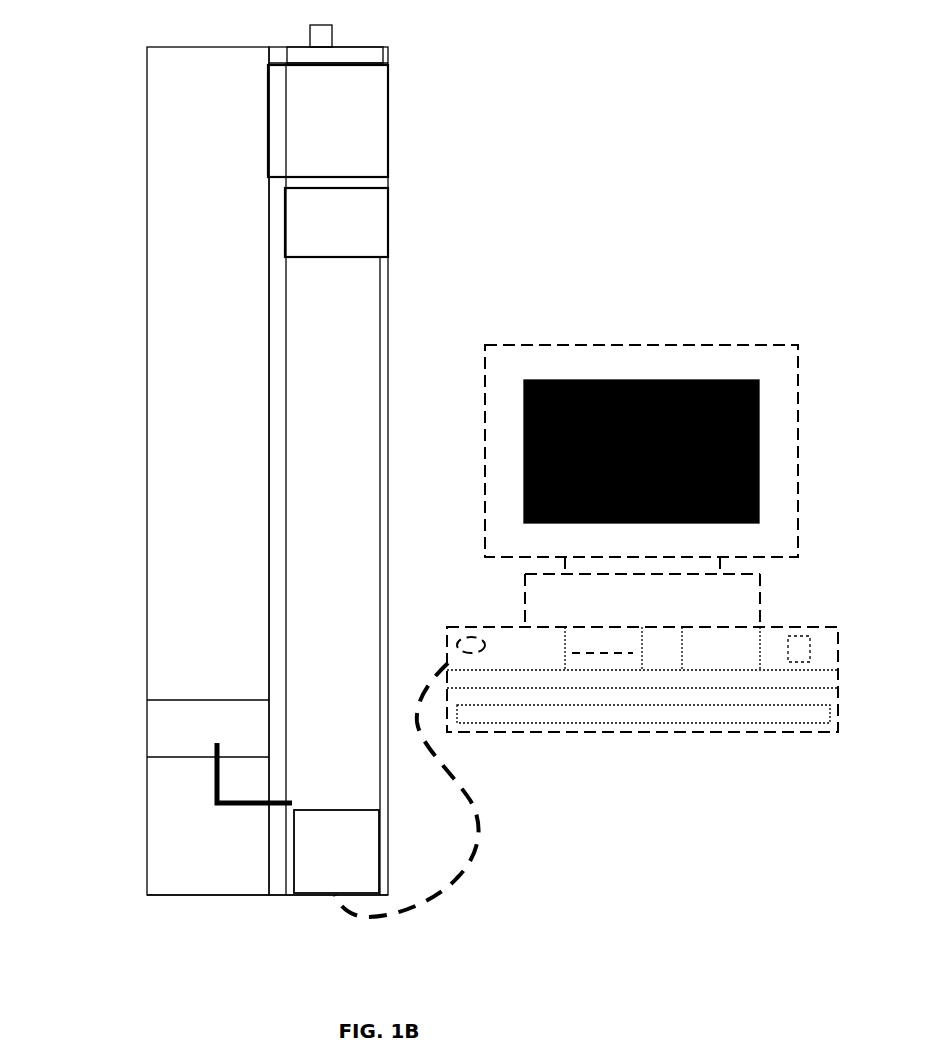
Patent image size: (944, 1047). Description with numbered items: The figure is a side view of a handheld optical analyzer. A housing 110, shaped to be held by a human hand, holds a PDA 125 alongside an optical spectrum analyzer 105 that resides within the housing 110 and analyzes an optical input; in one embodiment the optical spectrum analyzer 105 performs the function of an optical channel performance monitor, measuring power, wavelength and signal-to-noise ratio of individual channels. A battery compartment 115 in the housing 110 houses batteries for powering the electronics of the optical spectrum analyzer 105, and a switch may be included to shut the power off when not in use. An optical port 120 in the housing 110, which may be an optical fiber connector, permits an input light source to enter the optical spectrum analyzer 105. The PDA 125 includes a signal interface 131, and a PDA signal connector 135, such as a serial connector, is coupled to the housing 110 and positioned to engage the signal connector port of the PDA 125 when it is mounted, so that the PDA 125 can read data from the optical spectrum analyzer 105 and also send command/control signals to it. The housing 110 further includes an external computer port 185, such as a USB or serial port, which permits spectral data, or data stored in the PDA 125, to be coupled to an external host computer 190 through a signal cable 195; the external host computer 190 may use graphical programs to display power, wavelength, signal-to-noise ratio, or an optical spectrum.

The optical spectrum analyzer 105 is at (355, 655).
The housing 110 is at (190, 895).
The battery compartment 115 is at (388, 98).
The optical port 120 is at (388, 197).
The PDA 125 is at (148, 210).
The signal interface 131 is at (198, 738).
The PDA signal connector 135 is at (213, 802).
The external computer port 185 is at (302, 895).
The external host computer 190 is at (577, 342).
The signal cable 195 is at (447, 890).